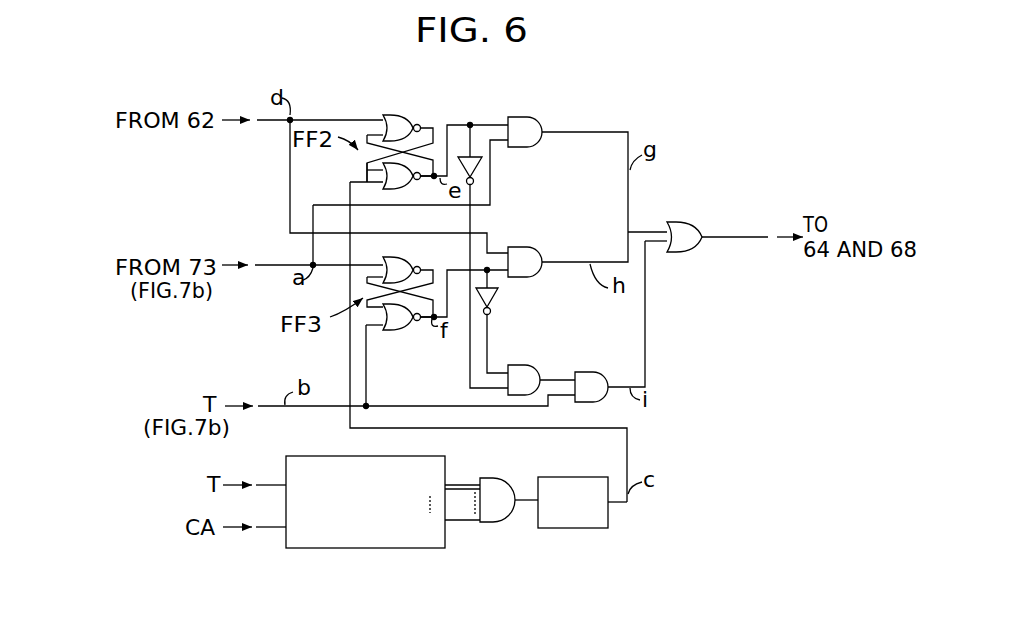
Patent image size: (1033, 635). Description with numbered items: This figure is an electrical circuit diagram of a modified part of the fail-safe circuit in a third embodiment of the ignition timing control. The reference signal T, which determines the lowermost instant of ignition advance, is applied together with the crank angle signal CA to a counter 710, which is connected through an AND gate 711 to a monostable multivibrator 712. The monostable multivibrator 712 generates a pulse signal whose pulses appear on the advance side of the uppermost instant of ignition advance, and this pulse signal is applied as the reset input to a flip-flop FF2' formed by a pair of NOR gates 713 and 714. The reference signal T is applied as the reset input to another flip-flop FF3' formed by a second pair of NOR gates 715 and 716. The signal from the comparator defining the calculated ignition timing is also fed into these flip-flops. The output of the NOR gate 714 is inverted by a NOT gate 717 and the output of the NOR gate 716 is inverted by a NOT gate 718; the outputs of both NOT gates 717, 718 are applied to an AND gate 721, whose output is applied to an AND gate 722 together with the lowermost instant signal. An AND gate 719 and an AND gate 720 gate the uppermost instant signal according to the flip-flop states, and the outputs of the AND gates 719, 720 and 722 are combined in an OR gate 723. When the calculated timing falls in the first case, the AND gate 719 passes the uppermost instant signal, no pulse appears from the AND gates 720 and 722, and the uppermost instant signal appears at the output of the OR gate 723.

The counter 710 is at (398, 549).
The AND gate 711 is at (492, 521).
The monostable multivibrator 712 is at (590, 529).
The NOR gate 713 is at (405, 113).
The NOR gate 714 is at (368, 172).
The NOR gate 715 is at (402, 260).
The NOR gate 716 is at (387, 333).
The NOT gate 717 is at (480, 172).
The NOT gate 718 is at (497, 310).
The AND gate 719 is at (527, 115).
The AND gate 720 is at (535, 245).
The AND gate 721 is at (525, 350).
The AND gate 722 is at (588, 372).
The OR gate 723 is at (677, 222).